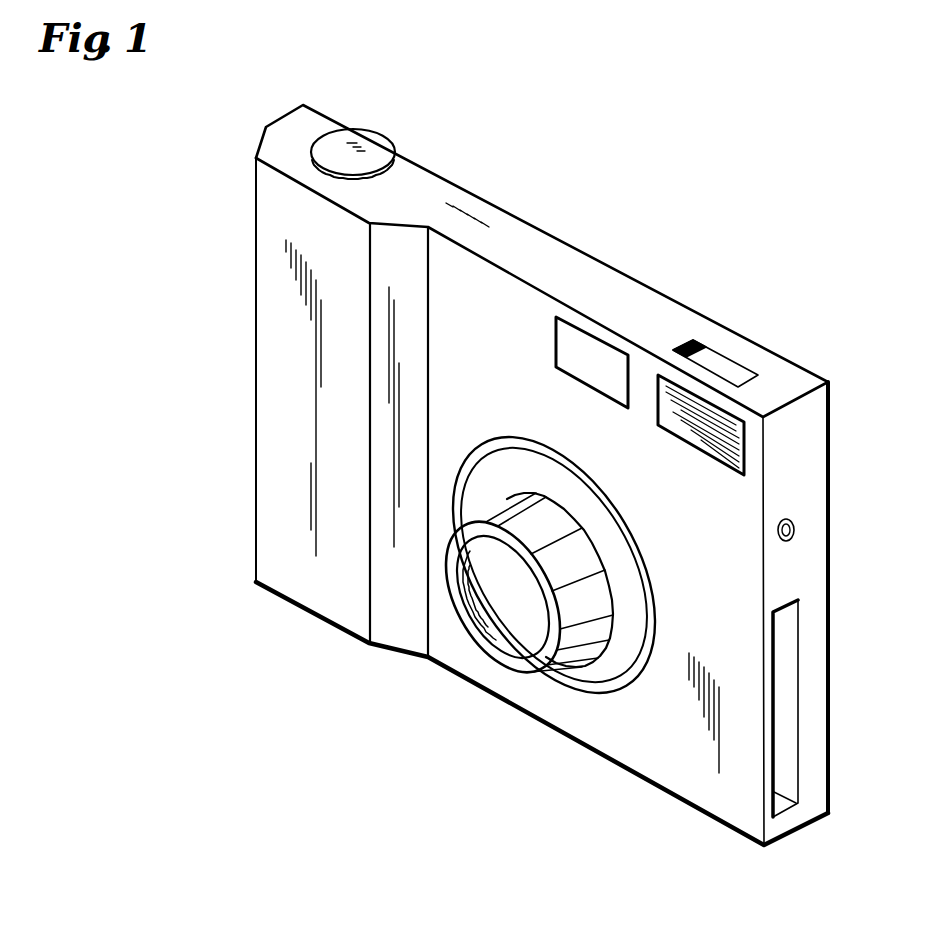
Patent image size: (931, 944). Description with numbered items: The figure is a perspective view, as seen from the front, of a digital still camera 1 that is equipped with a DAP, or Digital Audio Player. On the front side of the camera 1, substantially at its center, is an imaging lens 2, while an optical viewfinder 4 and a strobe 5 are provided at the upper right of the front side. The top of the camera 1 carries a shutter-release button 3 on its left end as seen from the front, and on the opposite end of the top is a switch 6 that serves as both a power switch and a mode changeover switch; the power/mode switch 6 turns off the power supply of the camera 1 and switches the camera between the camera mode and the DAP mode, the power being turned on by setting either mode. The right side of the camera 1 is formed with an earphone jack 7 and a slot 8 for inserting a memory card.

The digital still camera 1 is at (226, 313).
The imaging lens 2 is at (515, 628).
The shutter-release button 3 is at (380, 148).
The optical viewfinder 4 is at (595, 358).
The strobe 5 is at (730, 443).
The switch 6 is at (737, 373).
The earphone jack 7 is at (792, 533).
The slot 8 is at (782, 715).